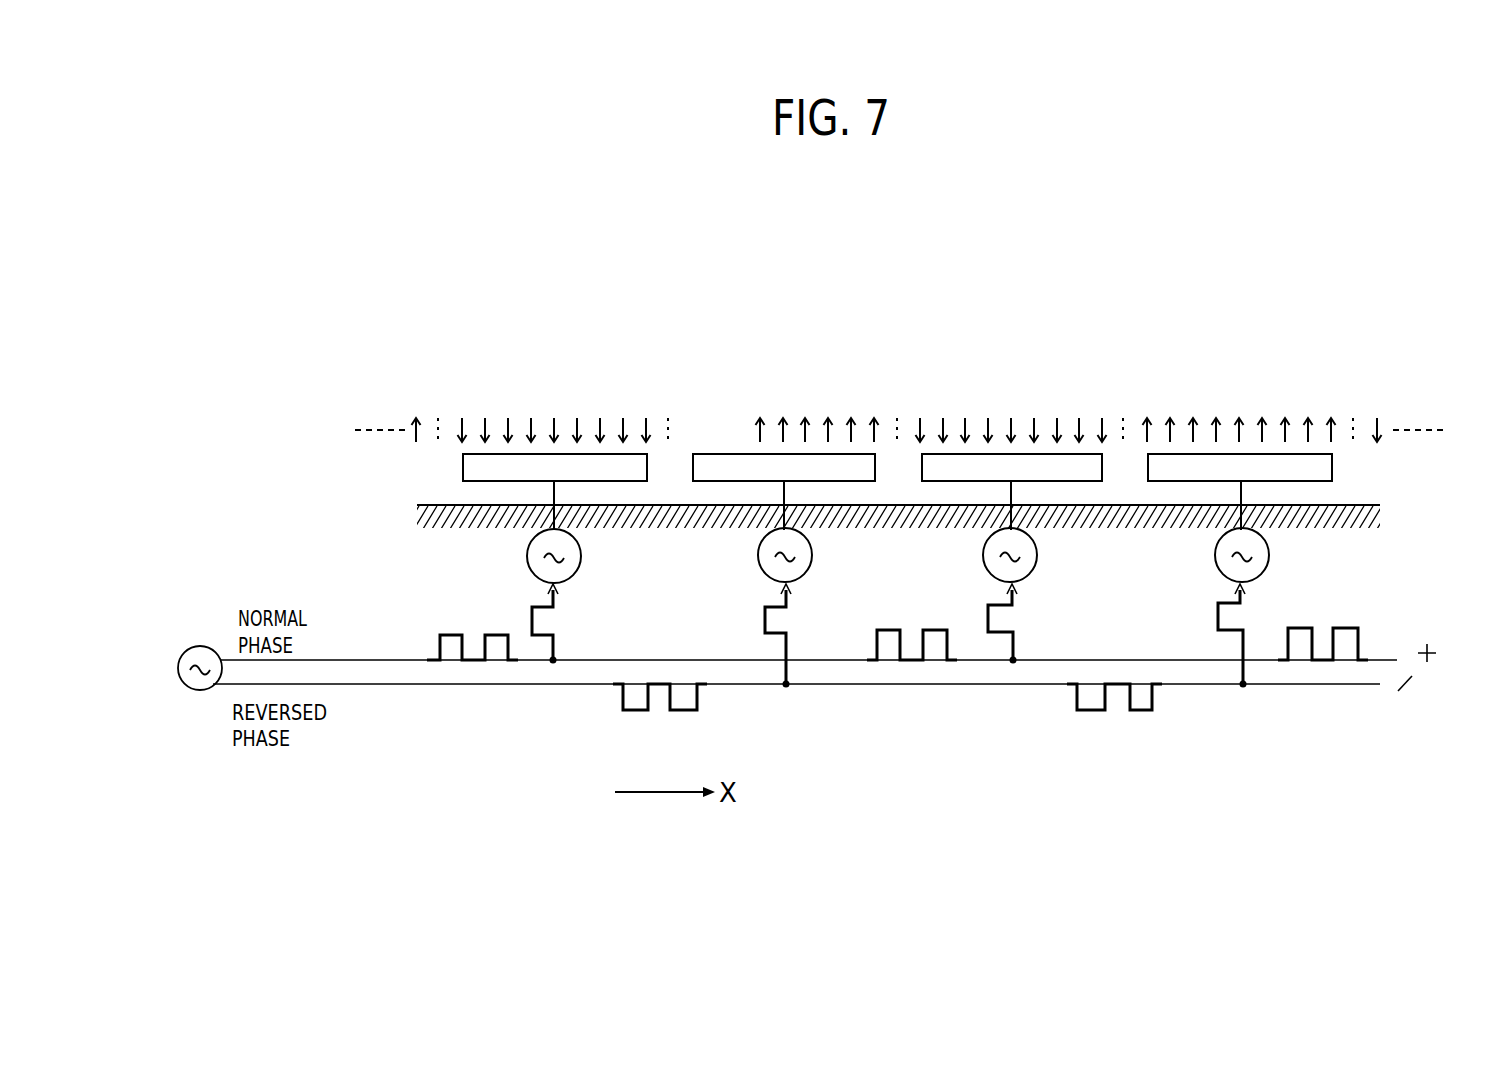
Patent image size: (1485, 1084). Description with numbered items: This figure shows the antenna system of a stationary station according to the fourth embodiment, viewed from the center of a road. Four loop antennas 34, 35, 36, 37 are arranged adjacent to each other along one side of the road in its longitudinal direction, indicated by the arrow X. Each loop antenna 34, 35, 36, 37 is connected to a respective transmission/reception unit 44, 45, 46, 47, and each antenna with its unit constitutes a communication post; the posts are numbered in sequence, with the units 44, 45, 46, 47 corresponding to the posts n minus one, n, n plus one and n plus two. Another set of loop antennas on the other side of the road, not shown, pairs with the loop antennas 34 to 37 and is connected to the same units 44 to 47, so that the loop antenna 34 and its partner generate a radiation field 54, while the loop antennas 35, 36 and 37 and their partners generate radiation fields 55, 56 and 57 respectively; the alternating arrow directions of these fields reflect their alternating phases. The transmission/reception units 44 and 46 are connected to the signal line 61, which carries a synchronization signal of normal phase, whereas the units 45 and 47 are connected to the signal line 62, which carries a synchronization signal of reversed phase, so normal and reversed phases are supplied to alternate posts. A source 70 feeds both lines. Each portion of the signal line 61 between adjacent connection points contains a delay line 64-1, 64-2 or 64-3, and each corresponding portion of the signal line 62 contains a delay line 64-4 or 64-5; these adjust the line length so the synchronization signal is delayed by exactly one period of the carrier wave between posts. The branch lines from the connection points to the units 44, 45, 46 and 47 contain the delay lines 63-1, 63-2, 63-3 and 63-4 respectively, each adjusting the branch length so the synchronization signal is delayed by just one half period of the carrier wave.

The loop antenna 34 is at (628, 455).
The loop antenna 35 is at (840, 455).
The loop antenna 36 is at (1067, 455).
The loop antenna 37 is at (1292, 455).
The transmission/reception unit 44 is at (580, 567).
The transmission/reception unit 45 is at (807, 570).
The transmission/reception unit 46 is at (1033, 568).
The transmission/reception unit 47 is at (1263, 568).
The radiation field 54 is at (598, 428).
The radiation field 55 is at (825, 423).
The radiation field 56 is at (1055, 423).
The radiation field 57 is at (1283, 423).
The signal line 61 is at (410, 657).
The signal line 62 is at (467, 688).
The delay line 63-1 is at (525, 606).
The delay line 63-2 is at (755, 608).
The delay line 63-3 is at (982, 605).
The delay line 63-4 is at (1212, 605).
The delay line 64-1 is at (515, 640).
The delay line 64-2 is at (952, 635).
The delay line 64-3 is at (1366, 634).
The delay line 64-4 is at (704, 700).
The delay line 64-5 is at (1160, 699).
The AC power source 70 is at (195, 648).